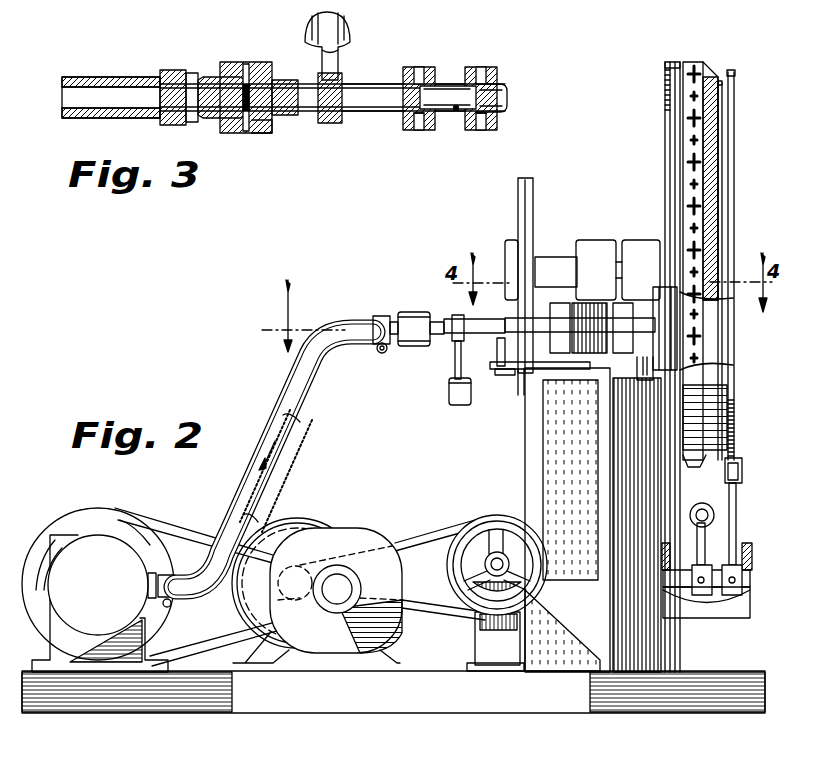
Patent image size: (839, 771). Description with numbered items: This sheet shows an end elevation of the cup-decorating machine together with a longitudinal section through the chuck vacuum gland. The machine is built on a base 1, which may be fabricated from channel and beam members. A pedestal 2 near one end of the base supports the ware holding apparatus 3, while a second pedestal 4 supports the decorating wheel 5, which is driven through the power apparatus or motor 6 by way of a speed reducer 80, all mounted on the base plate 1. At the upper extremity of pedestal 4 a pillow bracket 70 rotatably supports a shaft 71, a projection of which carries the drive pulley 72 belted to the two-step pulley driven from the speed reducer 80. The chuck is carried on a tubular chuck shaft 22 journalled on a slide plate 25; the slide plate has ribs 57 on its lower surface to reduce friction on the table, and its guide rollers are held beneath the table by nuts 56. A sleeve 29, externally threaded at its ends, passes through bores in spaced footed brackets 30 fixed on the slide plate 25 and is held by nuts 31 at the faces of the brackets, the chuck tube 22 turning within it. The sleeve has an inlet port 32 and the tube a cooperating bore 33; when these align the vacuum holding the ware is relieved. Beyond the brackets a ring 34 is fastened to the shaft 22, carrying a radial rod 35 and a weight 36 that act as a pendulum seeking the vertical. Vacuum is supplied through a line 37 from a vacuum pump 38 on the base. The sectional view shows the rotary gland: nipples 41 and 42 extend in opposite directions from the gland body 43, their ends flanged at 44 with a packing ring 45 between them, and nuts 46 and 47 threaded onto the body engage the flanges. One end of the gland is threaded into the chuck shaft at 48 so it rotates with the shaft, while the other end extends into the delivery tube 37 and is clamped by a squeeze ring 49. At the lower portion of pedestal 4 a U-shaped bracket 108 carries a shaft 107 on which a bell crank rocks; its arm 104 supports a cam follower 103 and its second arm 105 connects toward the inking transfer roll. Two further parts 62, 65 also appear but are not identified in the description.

In FIG. 2, the base 1 is at (585, 714).
In FIG. 2, the pedestal 2 is at (532, 491).
In FIG. 2, the ware holding apparatus 3 is at (301, 316).
In FIG. 2, the second pedestal 4 is at (652, 484).
In FIG. 2, the decorating wheel 5 is at (682, 60).
In FIG. 2, the power apparatus 6 is at (303, 531).
In FIG. 3, the tubular shaft 22 is at (506, 106).
In FIG. 2, the slide plate 25 is at (497, 362).
In FIG. 3, the sleeve 29 is at (455, 83).
In FIG. 3, the footed brackets 30 is at (420, 130).
In FIG. 2, the footed brackets 30 is at (548, 350).
In FIG. 3, the nuts 31 is at (424, 58).
In FIG. 3, the inlet port 32 is at (456, 112).
In FIG. 3, the bore 33 is at (458, 106).
In FIG. 3, the ring 34 is at (342, 78).
In FIG. 2, the ring 34 is at (456, 315).
In FIG. 2, the rod 35 is at (455, 363).
In FIG. 2, the weight 36 is at (449, 392).
In FIG. 3, the vacuum line 37 is at (114, 78).
In FIG. 2, the vacuum line 37 is at (298, 374).
In FIG. 2, the vacuum pump 38 is at (108, 542).
In FIG. 3, the nipple 41 is at (192, 73).
In FIG. 3, the nipple 42 is at (322, 76).
In FIG. 3, the gland body 43 is at (270, 134).
In FIG. 3, the flange 44 is at (246, 133).
In FIG. 3, the packing ring 45 is at (254, 57).
In FIG. 3, the nut 46 is at (212, 119).
In FIG. 3, the nut 47 is at (291, 116).
In FIG. 3, the threaded connection 48 is at (344, 115).
In FIG. 3, the squeeze ring 49 is at (166, 122).
In FIG. 2, the squeeze ring 49 is at (381, 315).
In FIG. 2, the nuts 56 is at (505, 372).
In FIG. 2, the ribs 57 is at (521, 375).
In FIG. 2, the part 62 is at (229, 762).
In FIG. 2, the part 65 is at (395, 761).
In FIG. 2, the pillow bracket 70 is at (587, 250).
In FIG. 2, the shaft 71 is at (548, 258).
In FIG. 2, the drive pulley 72 is at (533, 183).
In FIG. 2, the speed reducer 80 is at (478, 640).
In FIG. 2, the follower 103 is at (742, 470).
In FIG. 2, the arm 104 is at (736, 497).
In FIG. 2, the second arm 105 is at (697, 532).
In FIG. 2, the shaft 107 is at (752, 575).
In FIG. 2, the U-shaped bracket 108 is at (750, 607).